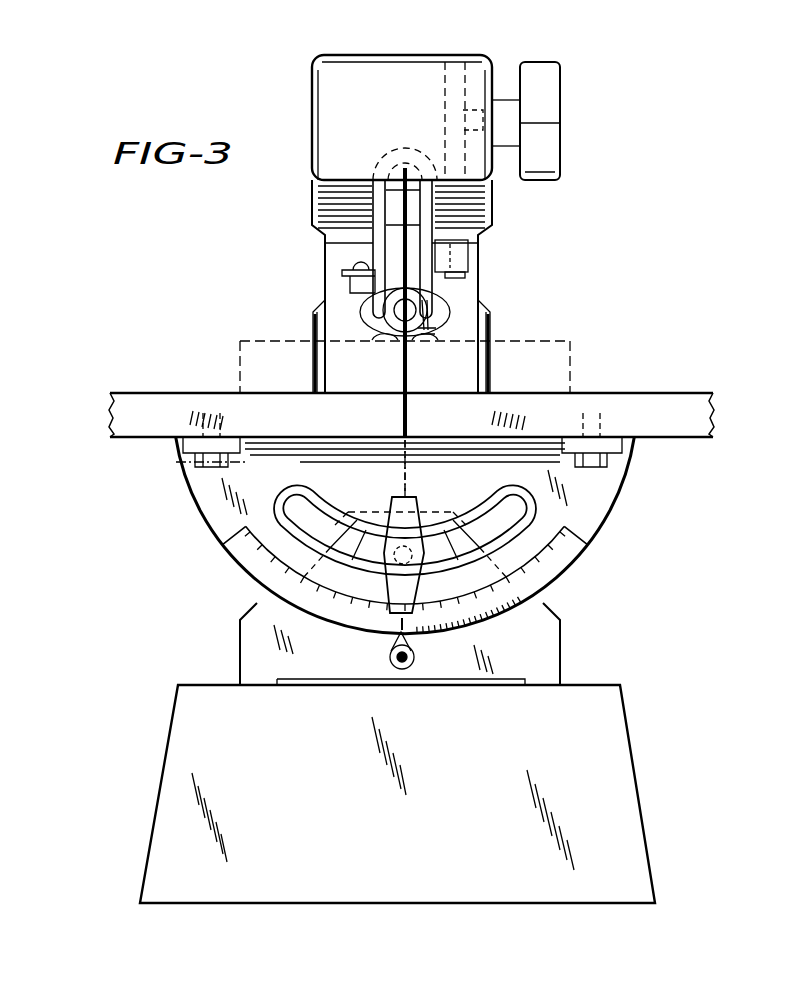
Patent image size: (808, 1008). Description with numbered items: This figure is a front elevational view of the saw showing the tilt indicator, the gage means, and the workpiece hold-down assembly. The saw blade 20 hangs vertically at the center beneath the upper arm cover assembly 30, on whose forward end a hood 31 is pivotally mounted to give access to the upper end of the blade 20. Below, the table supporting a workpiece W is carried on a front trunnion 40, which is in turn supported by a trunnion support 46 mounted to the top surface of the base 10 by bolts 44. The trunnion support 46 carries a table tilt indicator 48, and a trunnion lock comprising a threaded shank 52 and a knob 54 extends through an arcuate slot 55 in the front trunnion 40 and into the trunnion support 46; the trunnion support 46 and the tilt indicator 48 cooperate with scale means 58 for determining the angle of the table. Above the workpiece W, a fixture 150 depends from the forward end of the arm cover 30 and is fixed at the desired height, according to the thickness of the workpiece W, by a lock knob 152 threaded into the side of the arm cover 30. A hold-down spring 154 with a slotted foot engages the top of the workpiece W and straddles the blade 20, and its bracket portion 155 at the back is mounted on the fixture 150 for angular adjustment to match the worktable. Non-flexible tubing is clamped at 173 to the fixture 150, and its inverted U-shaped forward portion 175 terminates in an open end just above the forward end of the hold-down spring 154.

The base 10 is at (620, 804).
The saw blade 20 is at (392, 394).
The upper arm cover assembly 30 is at (633, 393).
The hood 31 is at (335, 125).
The front trunnion 40 is at (598, 510).
The bolts 44 is at (215, 470).
The trunnion support 46 is at (545, 632).
The table tilt indicator 48 is at (392, 644).
The threaded shank 52 is at (415, 560).
The knob 54 is at (405, 630).
The arcuate slot 55 is at (297, 513).
The scale means 58 is at (262, 576).
The fixture 150 is at (455, 260).
The lock knob 152 is at (548, 86).
The hold-down spring 154 is at (386, 344).
The bracket portion 155 is at (440, 312).
The clamp 173 is at (360, 282).
The forward portion of non-flexible tubing 175 is at (340, 268).
The workpiece W is at (572, 342).